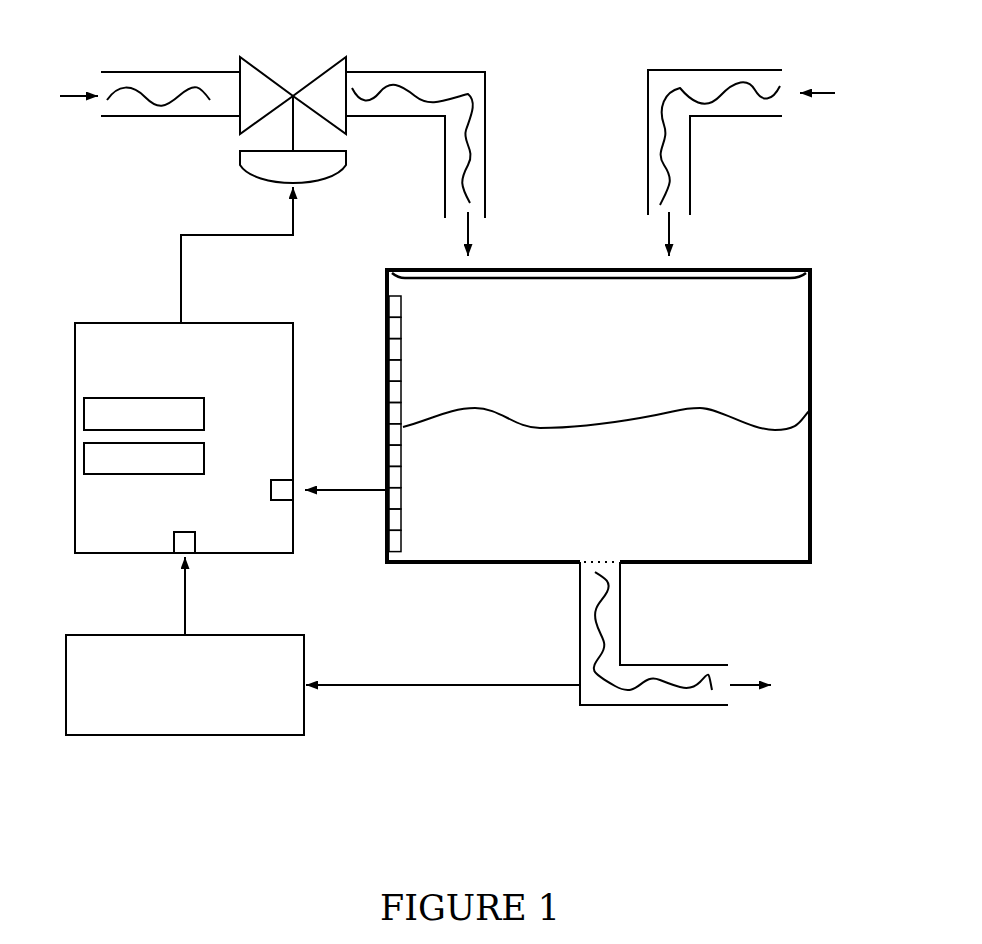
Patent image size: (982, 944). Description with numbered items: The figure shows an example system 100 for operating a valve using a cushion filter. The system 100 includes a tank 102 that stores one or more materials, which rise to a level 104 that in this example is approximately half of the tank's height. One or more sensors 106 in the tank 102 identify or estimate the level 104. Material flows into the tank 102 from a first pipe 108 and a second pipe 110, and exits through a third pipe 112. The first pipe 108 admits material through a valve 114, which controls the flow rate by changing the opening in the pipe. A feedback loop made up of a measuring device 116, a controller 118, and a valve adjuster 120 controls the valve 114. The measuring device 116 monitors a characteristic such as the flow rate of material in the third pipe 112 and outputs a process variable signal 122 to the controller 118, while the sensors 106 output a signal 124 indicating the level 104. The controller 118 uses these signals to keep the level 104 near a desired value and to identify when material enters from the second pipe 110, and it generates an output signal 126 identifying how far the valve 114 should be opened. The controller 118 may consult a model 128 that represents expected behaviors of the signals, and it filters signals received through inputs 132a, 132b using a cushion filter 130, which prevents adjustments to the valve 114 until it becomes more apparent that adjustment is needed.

The system 100 is at (787, 789).
The tank 102 is at (793, 268).
The level 104 is at (817, 418).
The sensors 106 is at (388, 308).
The first pipe 108 is at (473, 70).
The second pipe 110 is at (660, 70).
The third pipe 112 is at (600, 707).
The valve 114 is at (331, 62).
The measuring device 116 is at (138, 737).
The controller 118 is at (75, 480).
The valve adjuster 120 is at (250, 179).
The signal 122 is at (126, 611).
The signal 124 is at (349, 507).
The output signal 126 is at (147, 255).
The model 128 is at (206, 458).
The cushion filter 130 is at (206, 413).
The input 132a is at (172, 543).
The input 132b is at (270, 496).